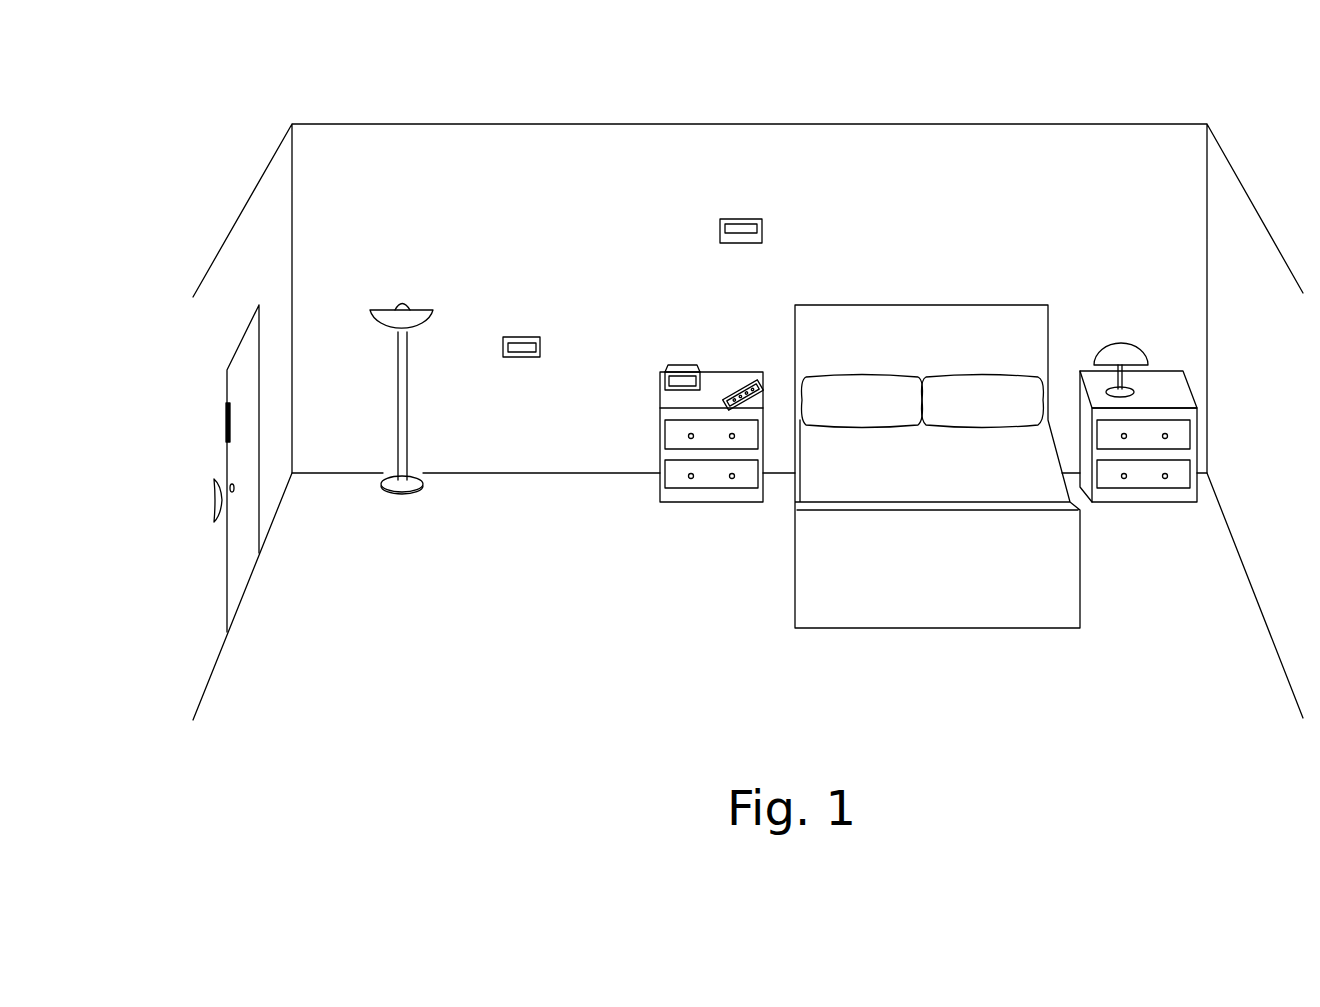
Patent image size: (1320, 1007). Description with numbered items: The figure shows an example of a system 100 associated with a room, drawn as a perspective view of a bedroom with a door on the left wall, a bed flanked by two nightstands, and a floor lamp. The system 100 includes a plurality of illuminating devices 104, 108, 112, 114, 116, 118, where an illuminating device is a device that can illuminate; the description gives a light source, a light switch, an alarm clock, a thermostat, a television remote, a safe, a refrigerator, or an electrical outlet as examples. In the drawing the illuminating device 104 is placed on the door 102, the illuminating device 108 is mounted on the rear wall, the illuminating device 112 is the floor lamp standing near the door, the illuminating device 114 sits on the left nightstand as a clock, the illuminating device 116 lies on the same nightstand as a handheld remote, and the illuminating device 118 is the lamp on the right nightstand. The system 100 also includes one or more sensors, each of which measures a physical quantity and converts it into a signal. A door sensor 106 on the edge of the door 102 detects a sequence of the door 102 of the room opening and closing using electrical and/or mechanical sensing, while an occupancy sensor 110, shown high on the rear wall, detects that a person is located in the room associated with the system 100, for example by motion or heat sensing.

The system 100 is at (322, 58).
The door 102 is at (230, 361).
The illuminating device 104 is at (214, 487).
The door sensor 106 is at (226, 418).
The illuminating device 108 is at (512, 336).
The occupancy sensor 110 is at (728, 218).
The illuminating device 112 is at (416, 310).
The illuminating device 114 is at (673, 364).
The illuminating device 116 is at (752, 384).
The illuminating device 118 is at (1126, 343).